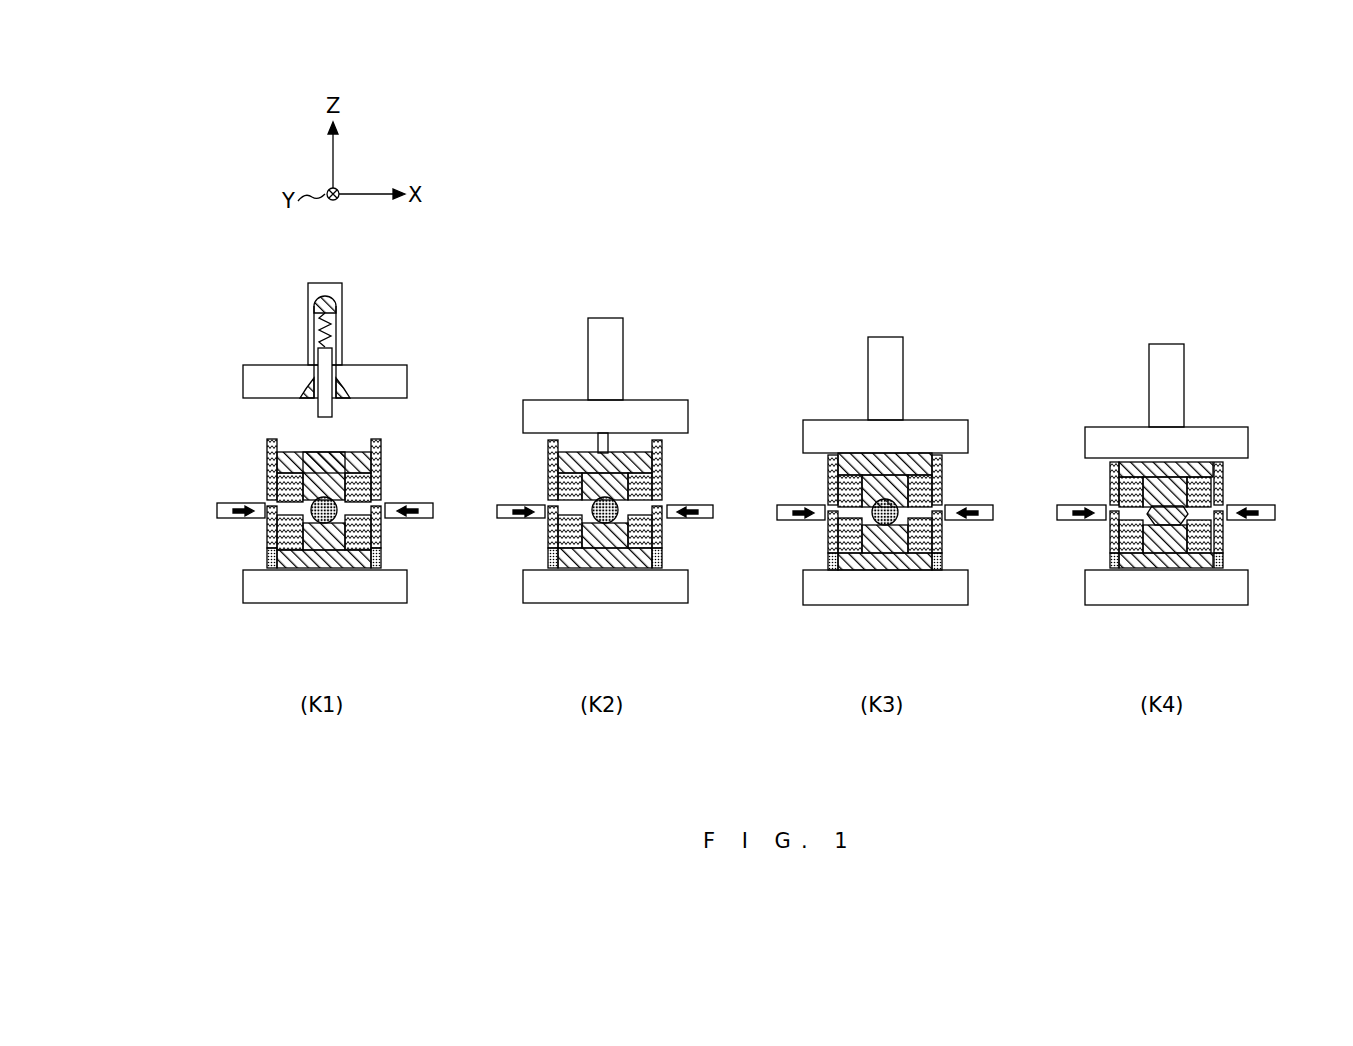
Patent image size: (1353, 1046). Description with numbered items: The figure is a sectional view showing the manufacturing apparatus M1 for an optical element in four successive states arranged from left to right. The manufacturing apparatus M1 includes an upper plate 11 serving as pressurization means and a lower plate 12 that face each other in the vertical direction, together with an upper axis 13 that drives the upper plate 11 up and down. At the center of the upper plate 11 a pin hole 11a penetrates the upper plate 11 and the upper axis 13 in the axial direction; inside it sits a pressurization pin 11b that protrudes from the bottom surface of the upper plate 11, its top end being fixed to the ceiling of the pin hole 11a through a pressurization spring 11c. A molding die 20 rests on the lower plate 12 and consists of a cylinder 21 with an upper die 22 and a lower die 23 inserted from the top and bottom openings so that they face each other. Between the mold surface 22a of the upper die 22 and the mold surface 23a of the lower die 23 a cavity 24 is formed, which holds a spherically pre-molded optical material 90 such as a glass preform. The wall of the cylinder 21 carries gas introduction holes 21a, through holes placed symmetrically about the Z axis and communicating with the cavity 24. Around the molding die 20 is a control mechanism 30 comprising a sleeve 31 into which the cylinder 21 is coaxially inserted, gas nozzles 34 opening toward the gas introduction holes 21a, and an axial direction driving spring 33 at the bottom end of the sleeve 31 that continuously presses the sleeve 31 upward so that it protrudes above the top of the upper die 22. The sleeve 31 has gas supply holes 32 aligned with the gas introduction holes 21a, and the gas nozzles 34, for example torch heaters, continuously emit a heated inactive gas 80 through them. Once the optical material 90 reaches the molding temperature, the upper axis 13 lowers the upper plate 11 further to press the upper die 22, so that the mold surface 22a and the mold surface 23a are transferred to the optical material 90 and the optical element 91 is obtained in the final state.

The upper plate 11 is at (263, 380).
The pin hole 11a is at (340, 384).
The pressurization pin 11b is at (318, 408).
The pressurization spring 11c is at (340, 336).
The lower plate 12 is at (255, 588).
The upper axis 13 is at (336, 302).
The molding die 20 is at (172, 430).
The cylinder 21 is at (290, 478).
The gas introduction holes 21a is at (285, 508).
The upper die 22 is at (300, 453).
The mold surface of upper die 22a is at (333, 470).
The lower die 23 is at (275, 562).
The mold surface of lower die 23a is at (333, 568).
The cavity 24 is at (305, 517).
The control mechanism 30 is at (726, 404).
The sleeve 31 is at (381, 442).
The gas supply holes 32 is at (270, 503).
The axial direction driving spring 33 is at (381, 560).
The gas nozzles 34 is at (222, 518).
The inactive gas 80 is at (240, 518).
The optical material 90 is at (337, 522).
The optical element 91 is at (1163, 528).
The manufacturing apparatus M1 is at (1226, 232).